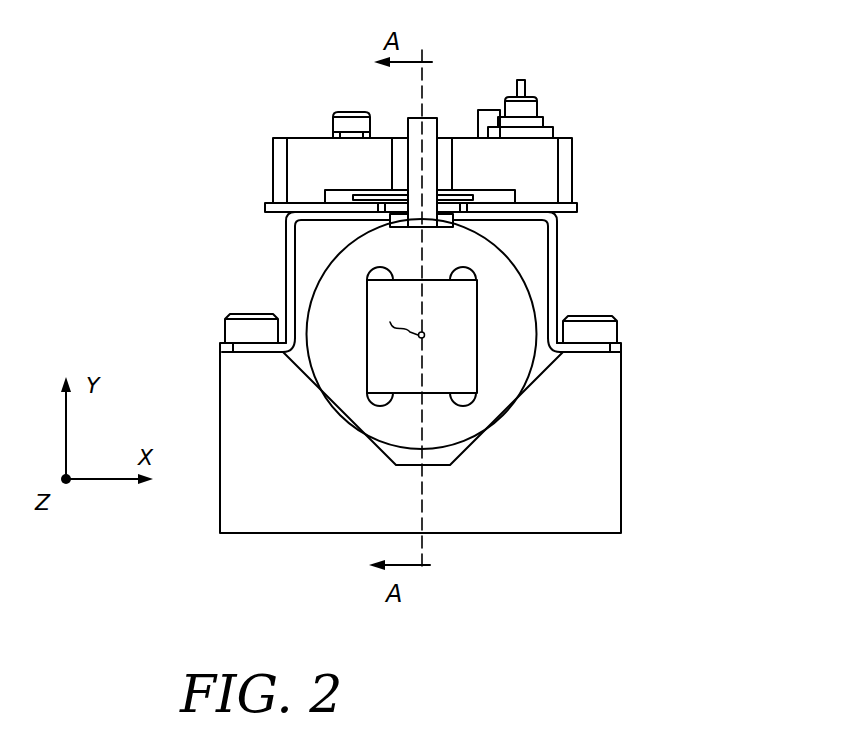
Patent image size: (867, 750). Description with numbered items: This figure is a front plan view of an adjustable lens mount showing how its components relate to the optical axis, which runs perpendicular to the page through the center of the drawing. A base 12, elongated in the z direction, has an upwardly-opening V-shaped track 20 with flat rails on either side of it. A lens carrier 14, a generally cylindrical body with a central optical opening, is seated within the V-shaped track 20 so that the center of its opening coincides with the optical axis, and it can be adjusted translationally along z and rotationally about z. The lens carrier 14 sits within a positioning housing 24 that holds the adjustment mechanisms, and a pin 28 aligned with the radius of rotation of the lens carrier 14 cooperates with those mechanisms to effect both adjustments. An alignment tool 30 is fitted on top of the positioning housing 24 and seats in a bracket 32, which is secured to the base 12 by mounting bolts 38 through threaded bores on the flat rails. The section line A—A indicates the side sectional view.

The base 12 is at (621, 412).
The lens carrier 14 is at (517, 273).
The V-shaped track 20 is at (457, 457).
The positioning housing 24 is at (566, 232).
The pin 28 is at (437, 128).
The alignment tool 30 is at (572, 150).
The bracket 32 is at (286, 272).
The mounting bolts 38 is at (243, 314).